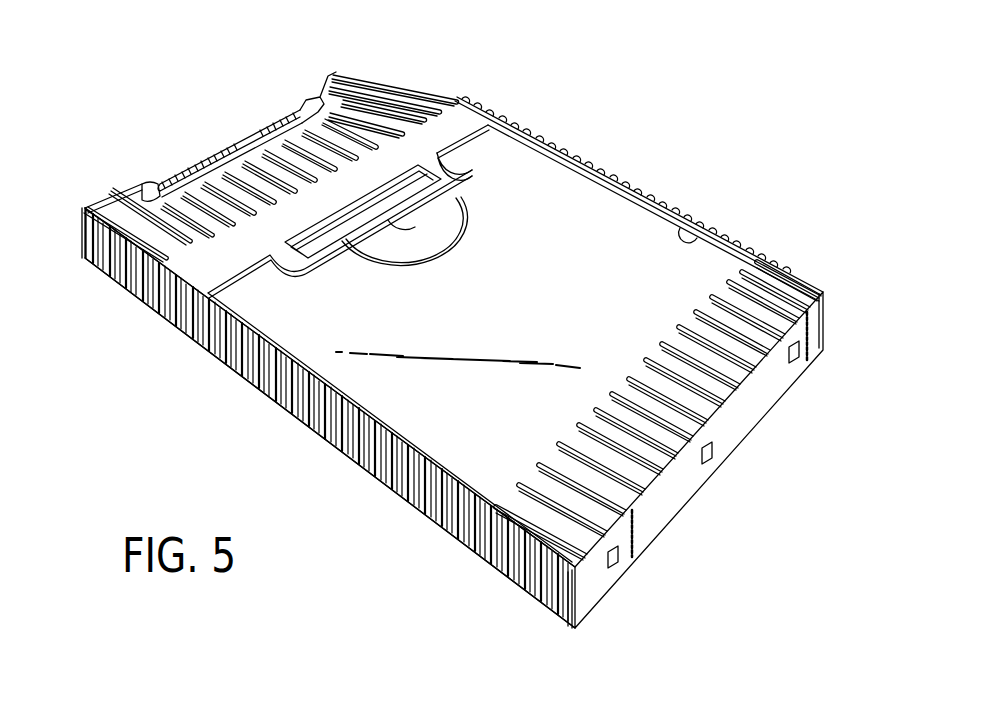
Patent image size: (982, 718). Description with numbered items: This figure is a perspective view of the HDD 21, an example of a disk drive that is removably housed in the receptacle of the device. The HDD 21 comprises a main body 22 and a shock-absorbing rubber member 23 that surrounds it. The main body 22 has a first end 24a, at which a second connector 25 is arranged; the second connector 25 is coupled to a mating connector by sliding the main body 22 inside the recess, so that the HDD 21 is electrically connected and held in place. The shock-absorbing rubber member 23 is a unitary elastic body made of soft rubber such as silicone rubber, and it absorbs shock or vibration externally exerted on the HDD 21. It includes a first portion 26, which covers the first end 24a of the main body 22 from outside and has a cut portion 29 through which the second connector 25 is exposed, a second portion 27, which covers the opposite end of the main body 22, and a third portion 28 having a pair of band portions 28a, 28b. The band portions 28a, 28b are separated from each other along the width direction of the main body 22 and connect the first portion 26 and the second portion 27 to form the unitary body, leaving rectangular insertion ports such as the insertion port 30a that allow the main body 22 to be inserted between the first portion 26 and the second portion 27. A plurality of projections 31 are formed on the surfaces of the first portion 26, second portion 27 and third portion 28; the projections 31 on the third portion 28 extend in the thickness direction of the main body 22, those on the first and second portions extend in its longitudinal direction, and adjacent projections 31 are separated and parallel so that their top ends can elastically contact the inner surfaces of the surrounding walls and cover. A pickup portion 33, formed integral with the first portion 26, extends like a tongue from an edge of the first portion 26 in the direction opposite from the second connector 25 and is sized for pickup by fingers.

The HDD 21 is at (632, 172).
The main body 22 is at (368, 392).
The shock-absorbing rubber member 23 is at (463, 118).
The first end 24a is at (308, 118).
The second connector 25 is at (240, 141).
The first portion 26 is at (197, 277).
The second portion 27 is at (747, 310).
The third portion 28 is at (427, 463).
The band portion 28a is at (280, 386).
The band portion 28b is at (568, 157).
The cut portion 29 is at (173, 200).
The rectangular insertion port 30a is at (690, 231).
The projections 31 is at (372, 122).
The pickup portion 33 is at (441, 200).